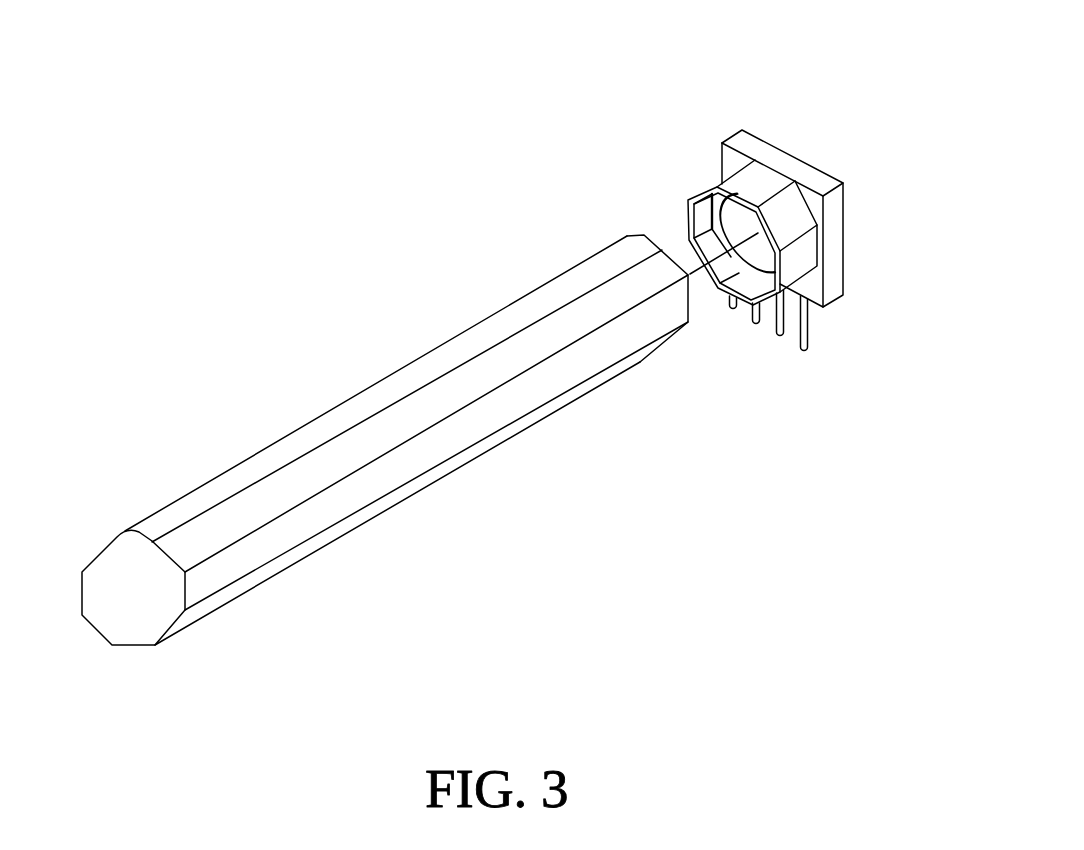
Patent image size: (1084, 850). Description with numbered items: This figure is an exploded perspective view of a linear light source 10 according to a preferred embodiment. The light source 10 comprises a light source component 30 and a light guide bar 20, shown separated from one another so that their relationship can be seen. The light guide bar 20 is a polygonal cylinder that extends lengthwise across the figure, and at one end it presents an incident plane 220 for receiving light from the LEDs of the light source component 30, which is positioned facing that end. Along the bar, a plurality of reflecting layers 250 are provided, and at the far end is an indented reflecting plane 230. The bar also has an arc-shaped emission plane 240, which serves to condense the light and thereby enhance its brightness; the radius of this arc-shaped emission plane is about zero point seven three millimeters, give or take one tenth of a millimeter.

The light source 10 is at (278, 222).
The light guide bar 20 is at (584, 428).
The light source component 30 is at (805, 143).
The incident plane 220 is at (668, 253).
The indented reflecting plane 230 is at (137, 646).
The arc-shaped emission plane 240 is at (268, 452).
The reflecting layers 250 is at (386, 481).